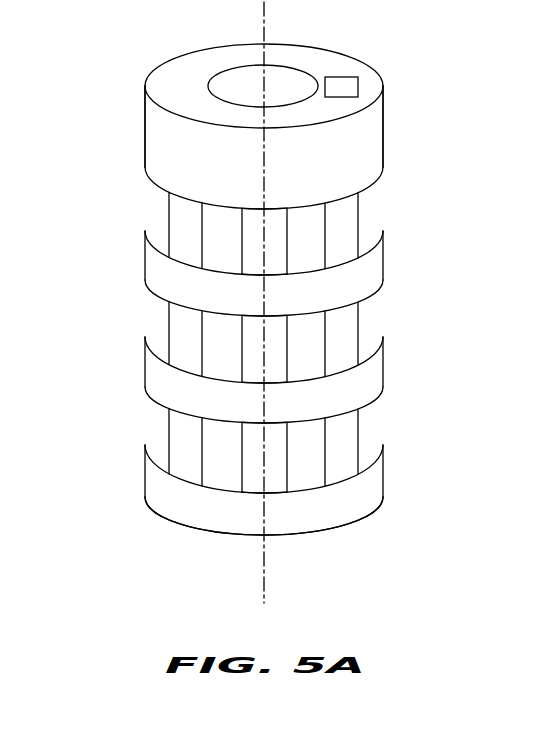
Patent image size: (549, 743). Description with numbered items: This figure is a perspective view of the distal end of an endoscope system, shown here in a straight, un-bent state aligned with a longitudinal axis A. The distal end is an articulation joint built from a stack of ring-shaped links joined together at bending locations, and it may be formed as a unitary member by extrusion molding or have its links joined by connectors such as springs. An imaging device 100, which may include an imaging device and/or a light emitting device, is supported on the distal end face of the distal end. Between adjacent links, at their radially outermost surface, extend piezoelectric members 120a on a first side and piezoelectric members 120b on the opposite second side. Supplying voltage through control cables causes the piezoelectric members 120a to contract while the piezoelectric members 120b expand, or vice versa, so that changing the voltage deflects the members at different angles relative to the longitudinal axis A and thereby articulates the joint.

The imaging device 100 is at (360, 88).
The piezoelectric member 120a is at (178, 216).
The piezoelectric member 120b is at (348, 215).
The longitudinal axis A is at (265, 580).